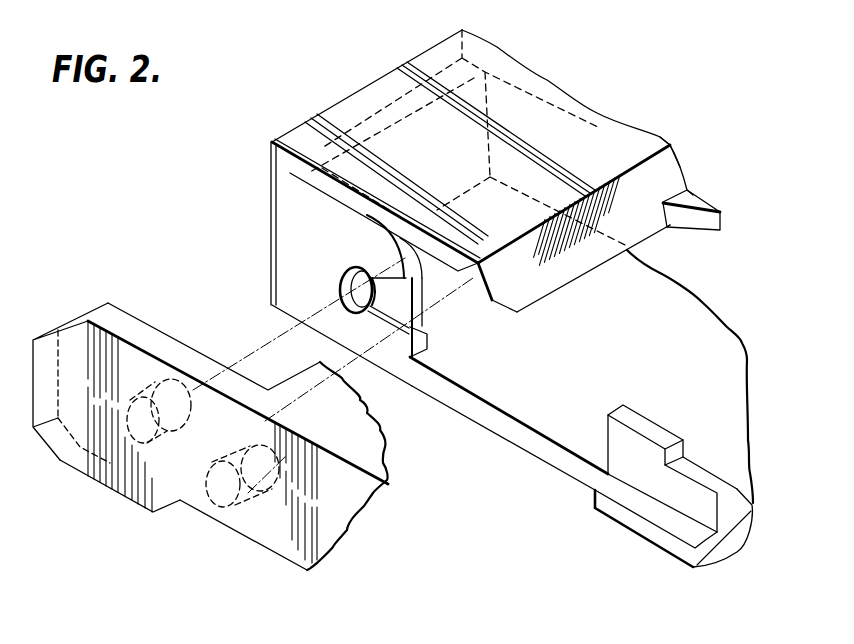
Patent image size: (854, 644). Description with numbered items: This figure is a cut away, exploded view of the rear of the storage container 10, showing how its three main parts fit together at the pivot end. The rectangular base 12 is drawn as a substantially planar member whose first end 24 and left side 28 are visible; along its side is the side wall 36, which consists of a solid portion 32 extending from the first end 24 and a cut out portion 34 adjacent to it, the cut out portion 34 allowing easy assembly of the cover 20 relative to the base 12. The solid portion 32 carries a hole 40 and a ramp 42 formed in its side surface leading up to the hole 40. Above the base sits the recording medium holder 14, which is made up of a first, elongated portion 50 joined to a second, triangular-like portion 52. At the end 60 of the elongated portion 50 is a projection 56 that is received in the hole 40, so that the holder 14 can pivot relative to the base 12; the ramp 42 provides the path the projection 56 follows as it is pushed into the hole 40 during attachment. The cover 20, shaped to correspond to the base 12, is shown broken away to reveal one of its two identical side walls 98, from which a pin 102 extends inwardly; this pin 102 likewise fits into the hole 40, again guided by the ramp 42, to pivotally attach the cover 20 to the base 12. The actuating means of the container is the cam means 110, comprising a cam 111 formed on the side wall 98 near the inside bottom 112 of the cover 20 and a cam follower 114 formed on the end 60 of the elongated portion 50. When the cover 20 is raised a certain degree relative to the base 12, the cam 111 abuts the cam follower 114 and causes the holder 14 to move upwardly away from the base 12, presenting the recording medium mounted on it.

The storage container 10 is at (669, 49).
The base 12 is at (727, 337).
The recording medium holder 14 is at (663, 173).
The cover 20 is at (352, 503).
The first end 24 is at (387, 137).
The left side 28 is at (553, 458).
The solid portion 32 is at (303, 213).
The cut out portion 34 is at (495, 398).
The side wall 36 is at (640, 446).
The hole 40 is at (338, 289).
The ramp 42 is at (421, 297).
The first, elongated portion 50 is at (528, 97).
The second, triangular-like portion 52 is at (697, 218).
The projection 56 is at (355, 278).
The end 60 is at (272, 157).
The side wall 98 is at (123, 352).
The pin 102 is at (145, 450).
The cam means 110 is at (175, 512).
The cam 111 is at (305, 489).
The inside bottom 112 is at (275, 556).
The cam follower 114 is at (470, 290).